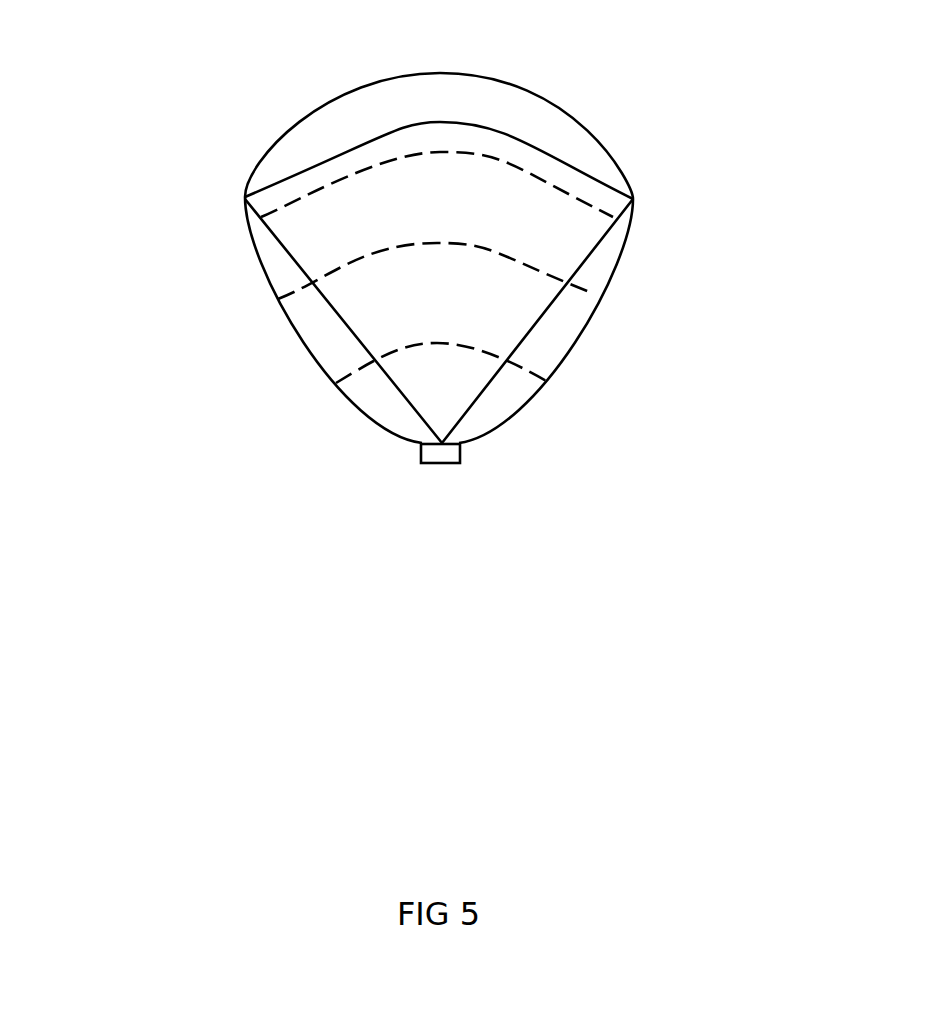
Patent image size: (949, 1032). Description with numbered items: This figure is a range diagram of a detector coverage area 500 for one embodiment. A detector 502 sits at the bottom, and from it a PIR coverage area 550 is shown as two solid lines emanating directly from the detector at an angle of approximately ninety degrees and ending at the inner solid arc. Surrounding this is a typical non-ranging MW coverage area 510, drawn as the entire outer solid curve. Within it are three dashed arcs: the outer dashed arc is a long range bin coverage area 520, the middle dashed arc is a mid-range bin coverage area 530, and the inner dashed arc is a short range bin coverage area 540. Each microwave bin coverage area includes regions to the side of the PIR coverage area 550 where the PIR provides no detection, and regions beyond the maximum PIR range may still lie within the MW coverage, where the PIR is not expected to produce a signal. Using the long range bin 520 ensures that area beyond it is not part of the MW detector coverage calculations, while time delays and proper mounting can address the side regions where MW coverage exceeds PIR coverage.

The detector coverage area 500 is at (297, 125).
The detector 502 is at (440, 474).
The typical non-ranging MW coverage area 510 is at (587, 258).
The long range bin coverage area 520 is at (563, 188).
The mid-range bin coverage area 530 is at (557, 289).
The short range bin coverage area 540 is at (576, 379).
The PIR coverage area 550 is at (439, 370).